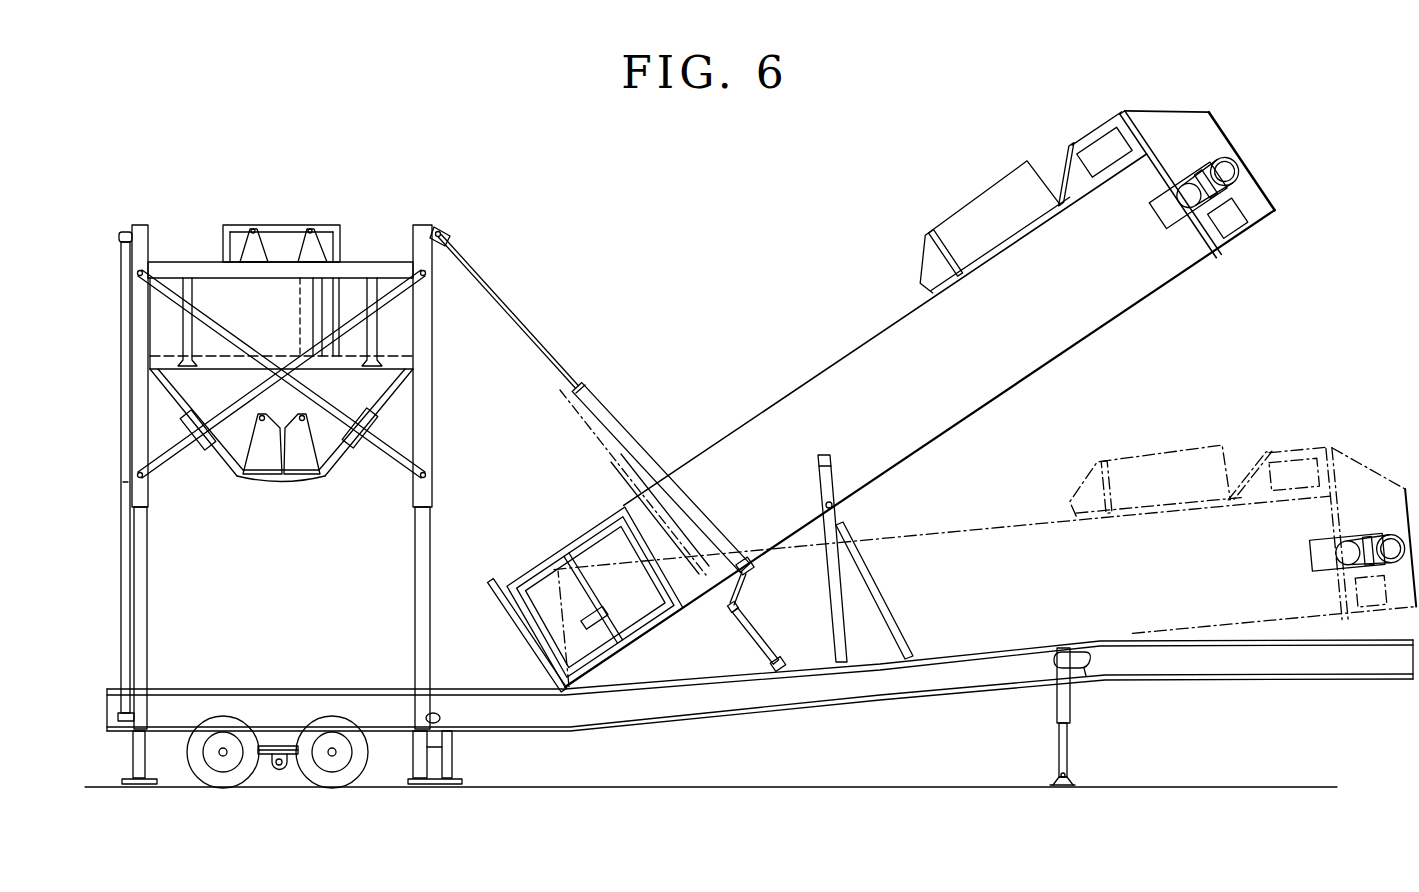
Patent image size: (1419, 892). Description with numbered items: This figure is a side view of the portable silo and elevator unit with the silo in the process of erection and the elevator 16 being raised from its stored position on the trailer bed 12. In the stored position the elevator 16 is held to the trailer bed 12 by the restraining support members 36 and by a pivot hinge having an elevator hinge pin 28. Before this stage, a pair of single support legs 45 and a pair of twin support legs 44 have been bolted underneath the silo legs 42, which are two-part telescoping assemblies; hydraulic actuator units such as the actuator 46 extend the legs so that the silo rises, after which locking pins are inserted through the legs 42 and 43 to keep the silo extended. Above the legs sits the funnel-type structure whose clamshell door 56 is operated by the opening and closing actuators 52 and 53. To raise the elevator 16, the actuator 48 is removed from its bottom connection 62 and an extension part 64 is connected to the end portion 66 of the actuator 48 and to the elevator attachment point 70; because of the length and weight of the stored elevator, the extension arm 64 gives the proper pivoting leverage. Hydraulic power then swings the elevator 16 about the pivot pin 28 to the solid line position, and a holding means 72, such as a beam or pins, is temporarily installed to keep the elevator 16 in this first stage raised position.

The trailer bed 12 is at (857, 690).
The elevator 16 is at (870, 340).
The elevator hinge pin 28 is at (567, 692).
The restraining support members 36 is at (886, 617).
The silo leg 42 is at (147, 595).
The leg 43 is at (134, 400).
The twin support legs 44 is at (455, 758).
The single support legs 45 is at (133, 754).
The hydraulic actuator unit 46 is at (122, 594).
The hydraulic actuator 48 is at (636, 455).
The opening and closing actuator 52 is at (354, 450).
The opening and closing actuator 53 is at (205, 450).
The clamshell door 56 is at (266, 483).
The bottom connection 62 is at (438, 714).
The extension part 64 is at (763, 637).
The end portion 66 is at (731, 611).
The elevator attachment point 70 is at (753, 569).
The holding means 72 is at (831, 500).